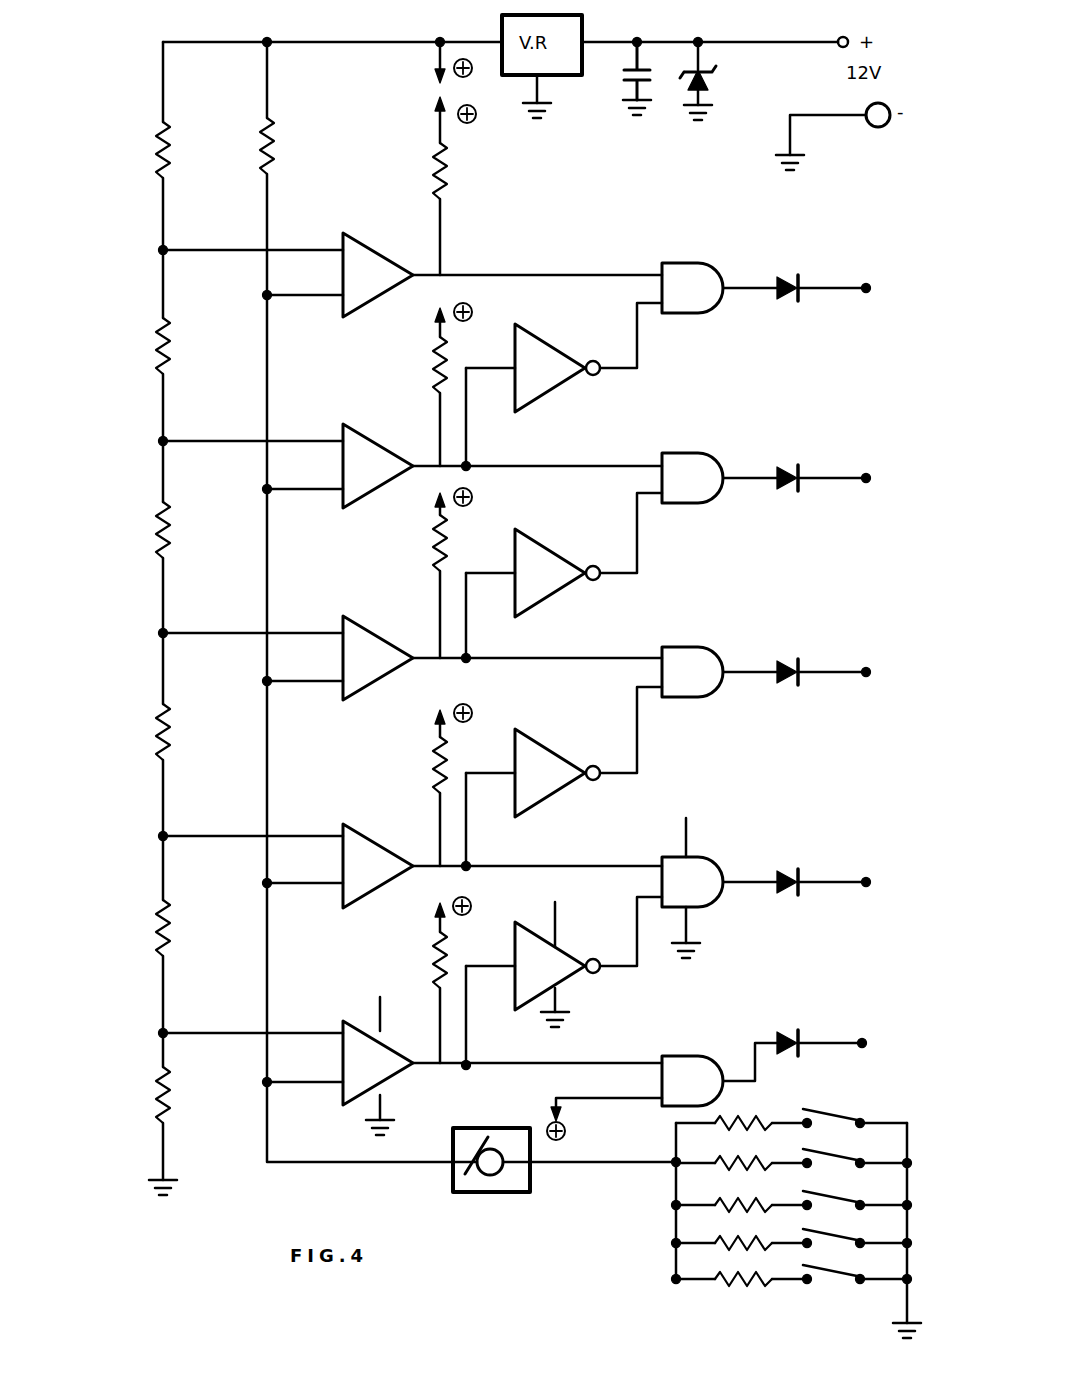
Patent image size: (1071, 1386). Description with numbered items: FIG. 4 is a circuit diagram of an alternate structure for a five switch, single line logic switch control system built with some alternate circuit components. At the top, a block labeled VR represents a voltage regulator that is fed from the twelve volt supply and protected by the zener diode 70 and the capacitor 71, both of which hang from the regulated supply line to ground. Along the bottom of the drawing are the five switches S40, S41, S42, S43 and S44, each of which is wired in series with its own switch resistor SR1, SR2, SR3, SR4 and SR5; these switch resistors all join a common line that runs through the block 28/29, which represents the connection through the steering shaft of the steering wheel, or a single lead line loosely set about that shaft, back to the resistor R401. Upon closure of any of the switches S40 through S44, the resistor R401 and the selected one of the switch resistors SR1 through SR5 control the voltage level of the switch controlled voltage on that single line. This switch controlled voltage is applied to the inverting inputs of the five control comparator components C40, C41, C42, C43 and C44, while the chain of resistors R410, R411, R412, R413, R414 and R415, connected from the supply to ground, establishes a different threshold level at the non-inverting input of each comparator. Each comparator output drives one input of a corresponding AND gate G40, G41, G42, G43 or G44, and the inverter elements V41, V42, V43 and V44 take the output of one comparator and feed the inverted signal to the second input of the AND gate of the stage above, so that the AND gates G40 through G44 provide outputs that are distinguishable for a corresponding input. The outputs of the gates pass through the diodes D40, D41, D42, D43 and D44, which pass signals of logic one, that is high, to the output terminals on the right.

The zener diode 70 is at (713, 78).
The capacitor 71 is at (617, 76).
The block 28/29 28 is at (564, 1143).
The block 28/ 29 is at (534, 1106).
The resistor R401 is at (274, 145).
The resistor R410 is at (160, 150).
The resistor R411 is at (160, 343).
The resistor R412 is at (160, 524).
The resistor R413 is at (160, 732).
The resistor R414 is at (160, 936).
The resistor R415 is at (160, 1100).
The control comparator component C40 is at (378, 275).
The control comparator component C41 is at (378, 466).
The control comparator component C42 is at (378, 658).
The control comparator component C43 is at (378, 866).
The control comparator component C44 is at (378, 1063).
The inverter element V41 is at (557, 368).
The inverter element V42 is at (557, 573).
The inverter element V43 is at (557, 773).
The inverter element V44 is at (557, 966).
The AND gate G40 is at (692, 288).
The AND gate G41 is at (692, 478).
The AND gate G42 is at (692, 672).
The AND gate G43 is at (692, 882).
The AND gate G44 is at (692, 1081).
The diode D40 is at (836, 240).
The diode D41 is at (826, 436).
The diode D42 is at (824, 628).
The diode D43 is at (822, 840).
The diode D44 is at (815, 1004).
The switch resistor SR1 is at (770, 1100).
The switch resistor SR2 is at (716, 1158).
The switch resistor SR3 is at (716, 1200).
The switch resistor SR4 is at (716, 1240).
The switch resistor SR5 is at (716, 1276).
The switch S40 is at (906, 1093).
The switch S41 is at (834, 1152).
The switch S42 is at (834, 1194).
The switch S43 is at (830, 1232).
The switch S44 is at (830, 1268).